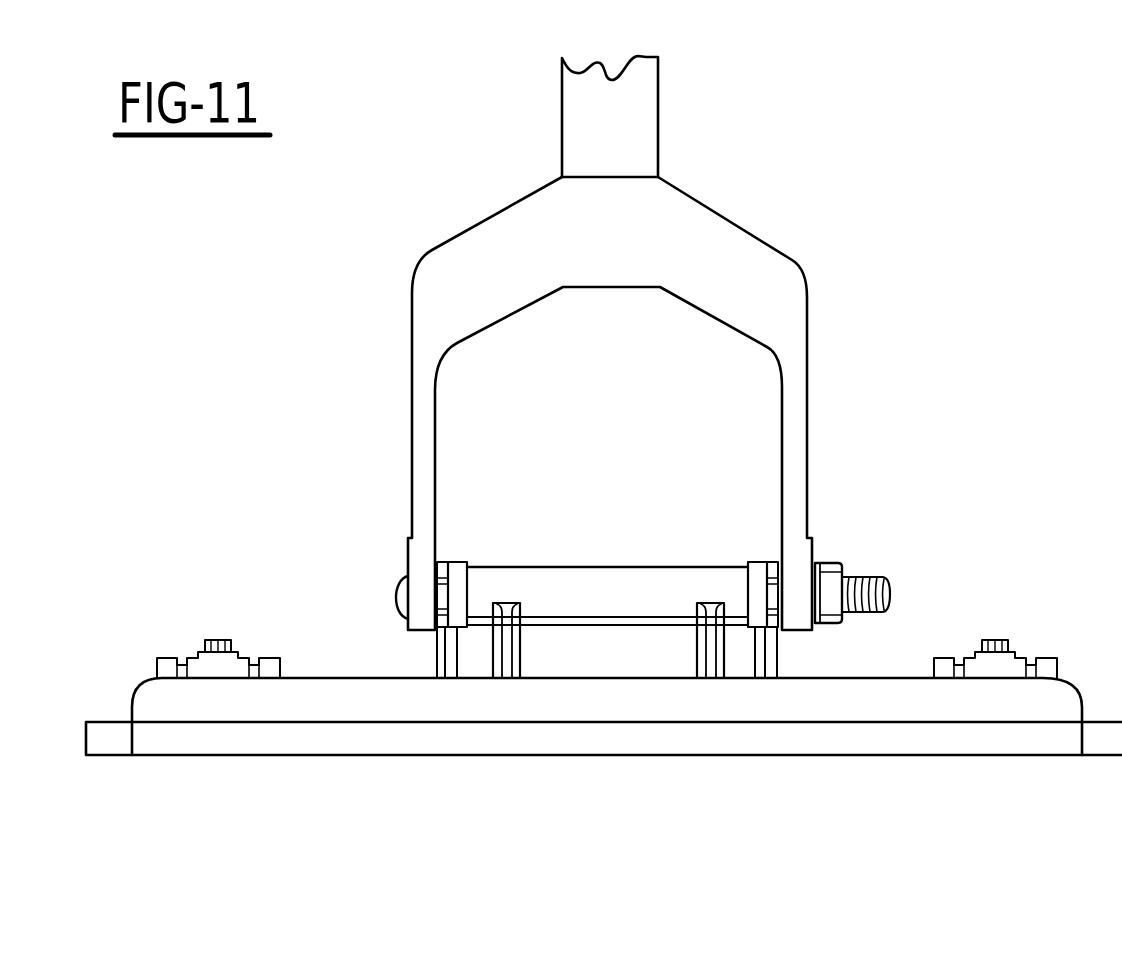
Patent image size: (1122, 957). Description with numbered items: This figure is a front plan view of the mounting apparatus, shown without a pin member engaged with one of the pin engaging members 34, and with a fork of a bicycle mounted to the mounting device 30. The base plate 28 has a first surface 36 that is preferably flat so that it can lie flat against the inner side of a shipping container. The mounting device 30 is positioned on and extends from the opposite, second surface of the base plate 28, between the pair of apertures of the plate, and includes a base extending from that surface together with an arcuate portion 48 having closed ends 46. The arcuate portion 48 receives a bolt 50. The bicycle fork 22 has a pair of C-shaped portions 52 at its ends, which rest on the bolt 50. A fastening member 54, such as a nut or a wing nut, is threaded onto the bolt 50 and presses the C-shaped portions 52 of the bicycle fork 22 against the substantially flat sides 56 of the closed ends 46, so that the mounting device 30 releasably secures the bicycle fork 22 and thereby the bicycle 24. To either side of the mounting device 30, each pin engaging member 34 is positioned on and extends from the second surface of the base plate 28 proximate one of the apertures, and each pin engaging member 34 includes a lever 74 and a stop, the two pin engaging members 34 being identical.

The bicycle fork 22 is at (790, 430).
The bicycle 24 is at (625, 143).
The base plate 28 is at (927, 738).
The mounting device 30 is at (710, 658).
The pin engaging member 34 is at (205, 640).
The first surface 36 is at (278, 755).
The closed ends 46 is at (598, 590).
The arcuate portion 48 is at (722, 585).
The bolt 50 is at (400, 586).
The C-shaped portions 52 is at (420, 565).
The fastening member 54 is at (825, 592).
The flat sides 56 is at (433, 598).
The lever 74 is at (230, 641).